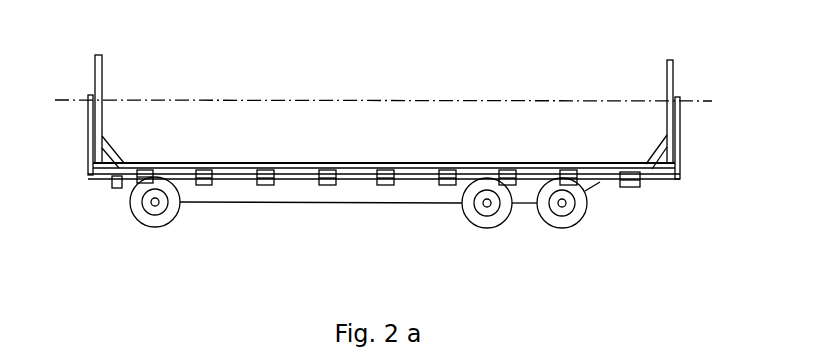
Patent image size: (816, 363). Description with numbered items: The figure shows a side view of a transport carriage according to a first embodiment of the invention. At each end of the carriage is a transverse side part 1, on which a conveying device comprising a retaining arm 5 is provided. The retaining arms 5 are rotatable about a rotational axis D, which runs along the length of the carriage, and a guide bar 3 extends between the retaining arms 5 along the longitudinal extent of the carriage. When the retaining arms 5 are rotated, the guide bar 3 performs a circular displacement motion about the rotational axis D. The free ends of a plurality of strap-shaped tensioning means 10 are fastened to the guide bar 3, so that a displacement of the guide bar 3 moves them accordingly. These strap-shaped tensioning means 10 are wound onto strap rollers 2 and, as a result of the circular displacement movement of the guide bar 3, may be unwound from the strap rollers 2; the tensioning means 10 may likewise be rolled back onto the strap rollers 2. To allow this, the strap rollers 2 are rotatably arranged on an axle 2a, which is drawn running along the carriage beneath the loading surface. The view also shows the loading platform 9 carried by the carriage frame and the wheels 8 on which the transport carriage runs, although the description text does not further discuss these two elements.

The transverse side part 1 is at (95, 85).
The retaining arm 5 is at (88, 139).
The guide bar 3 is at (103, 177).
The loading platform / deck 9 is at (474, 162).
The axle 2a is at (297, 184).
The strap roller 2 is at (265, 186).
The strap-shaped tensioning means 10 is at (265, 166).
The wheel 8 is at (153, 228).
The rotational axis D is at (133, 96).